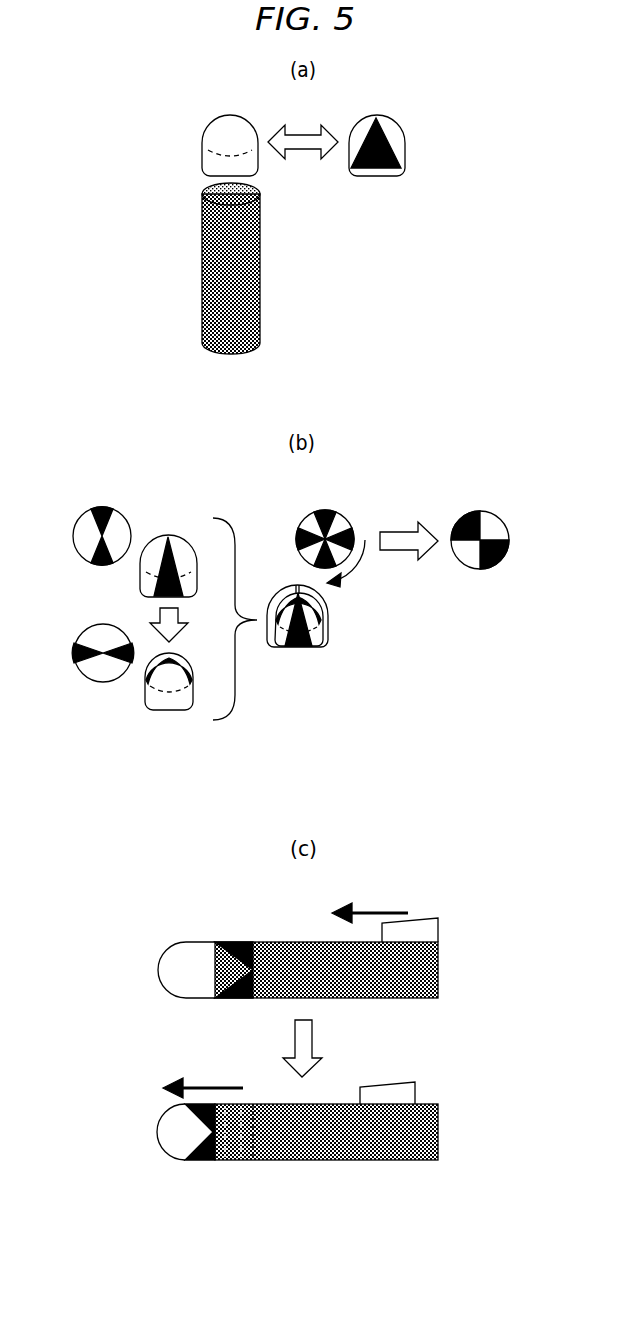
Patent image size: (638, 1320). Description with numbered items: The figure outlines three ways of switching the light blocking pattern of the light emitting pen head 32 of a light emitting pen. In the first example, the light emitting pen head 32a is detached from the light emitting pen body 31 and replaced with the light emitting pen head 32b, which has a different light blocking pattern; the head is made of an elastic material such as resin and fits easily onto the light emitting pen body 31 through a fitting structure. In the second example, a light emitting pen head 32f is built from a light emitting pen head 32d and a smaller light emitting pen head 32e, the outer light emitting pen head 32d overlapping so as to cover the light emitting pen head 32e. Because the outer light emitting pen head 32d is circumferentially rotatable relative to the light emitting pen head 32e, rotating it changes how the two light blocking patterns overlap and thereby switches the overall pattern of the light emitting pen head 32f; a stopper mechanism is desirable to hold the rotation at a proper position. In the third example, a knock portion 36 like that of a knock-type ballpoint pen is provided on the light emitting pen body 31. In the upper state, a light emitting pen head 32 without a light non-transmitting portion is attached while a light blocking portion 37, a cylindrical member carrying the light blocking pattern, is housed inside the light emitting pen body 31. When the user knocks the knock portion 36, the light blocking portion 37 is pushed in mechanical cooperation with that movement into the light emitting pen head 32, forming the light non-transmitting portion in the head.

The light emitting pen body 31 is at (200, 276).
The light emitting pen head 32 is at (157, 966).
The light emitting pen head 32a is at (201, 141).
The light emitting pen head 32b is at (406, 141).
The light emitting pen head 32d is at (170, 535).
The light emitting pen head 32e is at (170, 712).
The light emitting pen head 32f is at (341, 644).
The knock portion 36 is at (432, 921).
The light blocking portion 37 is at (240, 941).